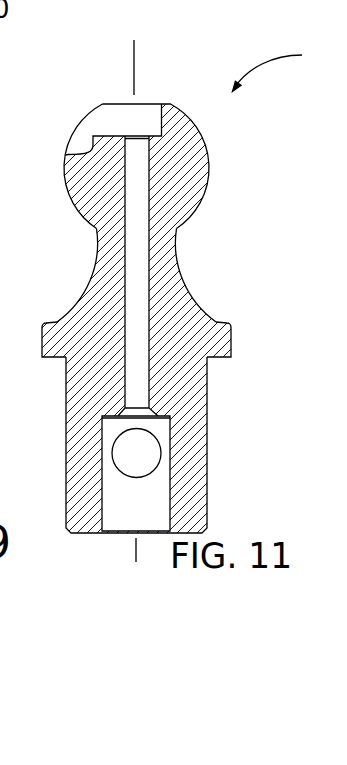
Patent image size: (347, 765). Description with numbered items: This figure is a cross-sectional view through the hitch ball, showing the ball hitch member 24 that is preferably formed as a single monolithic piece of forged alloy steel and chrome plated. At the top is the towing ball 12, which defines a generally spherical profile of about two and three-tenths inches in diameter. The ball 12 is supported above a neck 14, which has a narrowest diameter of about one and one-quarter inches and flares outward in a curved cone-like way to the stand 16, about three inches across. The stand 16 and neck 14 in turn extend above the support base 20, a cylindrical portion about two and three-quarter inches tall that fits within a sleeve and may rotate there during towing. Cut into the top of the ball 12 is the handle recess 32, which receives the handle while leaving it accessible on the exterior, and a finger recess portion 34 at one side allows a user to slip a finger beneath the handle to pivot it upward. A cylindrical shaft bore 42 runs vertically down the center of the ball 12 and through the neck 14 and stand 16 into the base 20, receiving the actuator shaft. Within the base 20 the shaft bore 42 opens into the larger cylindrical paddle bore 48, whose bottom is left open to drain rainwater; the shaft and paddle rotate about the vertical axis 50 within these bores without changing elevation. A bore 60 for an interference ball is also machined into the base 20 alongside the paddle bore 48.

The towing ball portion 12 is at (187, 160).
The neck 14 is at (176, 232).
The stand 16 is at (217, 337).
The support base 20 is at (197, 393).
The ball hitch member 24 is at (281, 73).
The handle recess 32 is at (120, 120).
The finger recess portion 34 is at (80, 140).
The shaft bore 42 is at (137, 235).
The paddle bore 48 is at (145, 504).
The vertical axis 50 is at (136, 551).
The bore for interference ball 60 is at (143, 455).